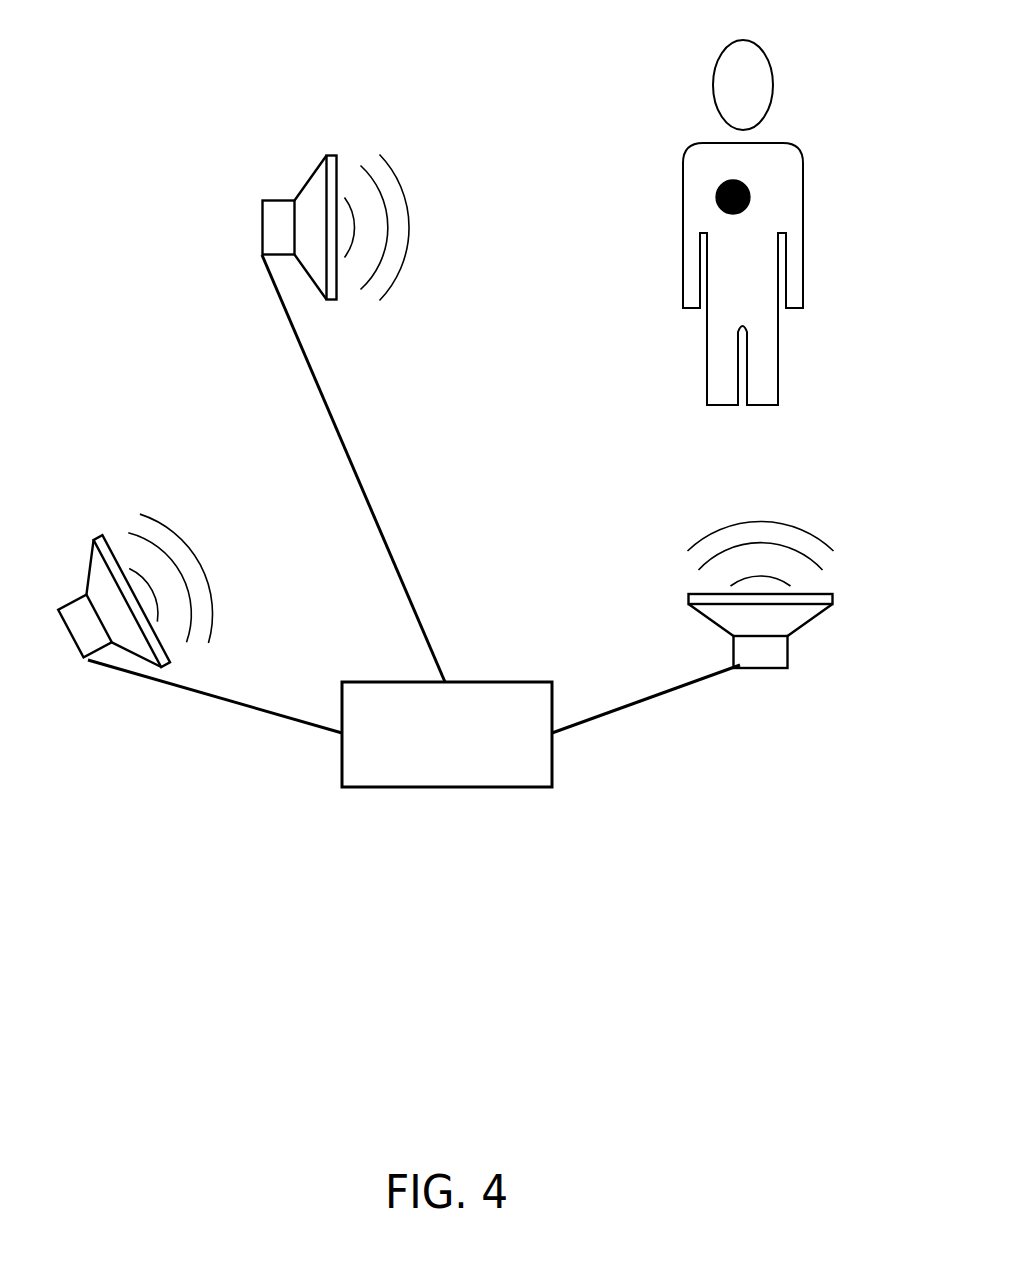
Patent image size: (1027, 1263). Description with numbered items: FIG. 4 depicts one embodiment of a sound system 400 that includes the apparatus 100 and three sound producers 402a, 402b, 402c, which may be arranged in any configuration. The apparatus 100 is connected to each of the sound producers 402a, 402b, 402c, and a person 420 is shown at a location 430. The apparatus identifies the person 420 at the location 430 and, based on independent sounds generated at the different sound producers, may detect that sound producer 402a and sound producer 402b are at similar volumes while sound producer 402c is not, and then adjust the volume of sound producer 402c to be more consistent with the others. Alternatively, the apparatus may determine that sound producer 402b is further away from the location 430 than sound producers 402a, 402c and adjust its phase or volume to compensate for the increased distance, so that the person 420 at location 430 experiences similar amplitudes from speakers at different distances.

The system 400 is at (135, 93).
The sound producer 402a is at (263, 200).
The sound producer 402b is at (90, 657).
The sound producer 402c is at (777, 667).
The apparatus 100 is at (447, 734).
The person 420 is at (675, 233).
The location 430 is at (750, 204).